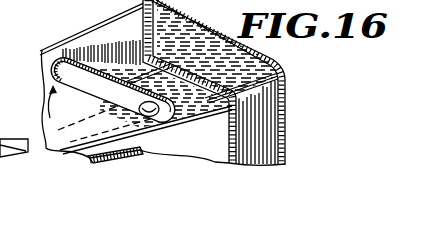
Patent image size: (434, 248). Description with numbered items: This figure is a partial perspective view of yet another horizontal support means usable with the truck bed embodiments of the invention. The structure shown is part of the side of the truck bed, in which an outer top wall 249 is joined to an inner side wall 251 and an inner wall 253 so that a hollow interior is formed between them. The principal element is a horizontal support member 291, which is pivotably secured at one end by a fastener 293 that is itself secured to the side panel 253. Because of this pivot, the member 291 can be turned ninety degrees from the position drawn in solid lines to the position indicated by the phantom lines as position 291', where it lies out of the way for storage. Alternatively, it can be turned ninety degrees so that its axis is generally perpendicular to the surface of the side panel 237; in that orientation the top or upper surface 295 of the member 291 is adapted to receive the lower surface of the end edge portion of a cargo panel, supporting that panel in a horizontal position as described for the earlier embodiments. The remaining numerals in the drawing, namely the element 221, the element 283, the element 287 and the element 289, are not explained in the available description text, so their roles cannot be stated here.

The side panel 237 is at (147, 26).
The horizontal support member 291 is at (95, 70).
The upper surface 295 is at (101, 52).
The outer top wall 249 is at (226, 54).
The inner wall 253 is at (230, 118).
The fastener 293 is at (191, 120).
The horizontal support member in storage position 291' is at (131, 147).
The base member 221 is at (0, 80).
The member 283 is at (216, 4).
The member 287 is at (276, 4).
The member 289 is at (321, 4).
The inner side wall 251 is at (378, 4).